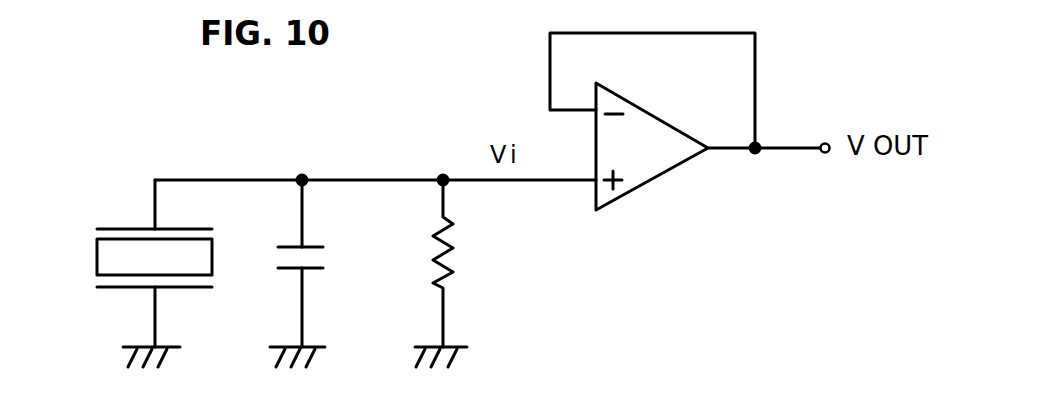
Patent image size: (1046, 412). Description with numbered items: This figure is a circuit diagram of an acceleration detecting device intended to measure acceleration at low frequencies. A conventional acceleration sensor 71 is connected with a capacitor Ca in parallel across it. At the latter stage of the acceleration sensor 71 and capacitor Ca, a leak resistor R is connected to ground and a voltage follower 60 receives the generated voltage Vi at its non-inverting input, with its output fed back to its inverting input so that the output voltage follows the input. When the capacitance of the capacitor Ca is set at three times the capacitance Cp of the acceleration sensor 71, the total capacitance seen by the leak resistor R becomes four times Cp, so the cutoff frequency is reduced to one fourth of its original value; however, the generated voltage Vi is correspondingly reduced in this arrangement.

The acceleration sensor 71 is at (98, 213).
The capacitor Ca is at (327, 240).
The leak resistor R is at (450, 245).
The voltage follower 60 is at (643, 189).